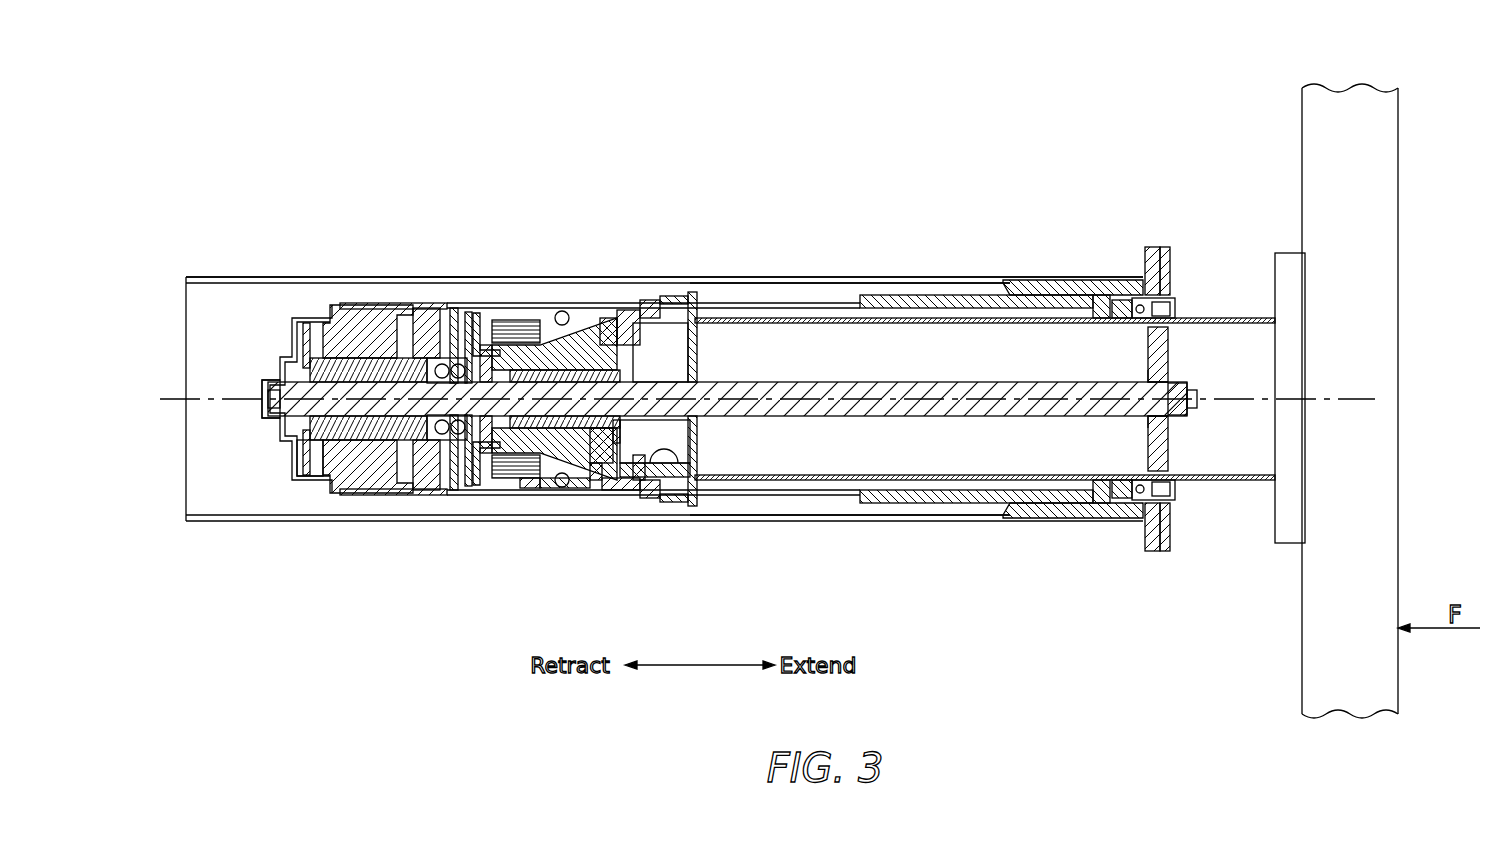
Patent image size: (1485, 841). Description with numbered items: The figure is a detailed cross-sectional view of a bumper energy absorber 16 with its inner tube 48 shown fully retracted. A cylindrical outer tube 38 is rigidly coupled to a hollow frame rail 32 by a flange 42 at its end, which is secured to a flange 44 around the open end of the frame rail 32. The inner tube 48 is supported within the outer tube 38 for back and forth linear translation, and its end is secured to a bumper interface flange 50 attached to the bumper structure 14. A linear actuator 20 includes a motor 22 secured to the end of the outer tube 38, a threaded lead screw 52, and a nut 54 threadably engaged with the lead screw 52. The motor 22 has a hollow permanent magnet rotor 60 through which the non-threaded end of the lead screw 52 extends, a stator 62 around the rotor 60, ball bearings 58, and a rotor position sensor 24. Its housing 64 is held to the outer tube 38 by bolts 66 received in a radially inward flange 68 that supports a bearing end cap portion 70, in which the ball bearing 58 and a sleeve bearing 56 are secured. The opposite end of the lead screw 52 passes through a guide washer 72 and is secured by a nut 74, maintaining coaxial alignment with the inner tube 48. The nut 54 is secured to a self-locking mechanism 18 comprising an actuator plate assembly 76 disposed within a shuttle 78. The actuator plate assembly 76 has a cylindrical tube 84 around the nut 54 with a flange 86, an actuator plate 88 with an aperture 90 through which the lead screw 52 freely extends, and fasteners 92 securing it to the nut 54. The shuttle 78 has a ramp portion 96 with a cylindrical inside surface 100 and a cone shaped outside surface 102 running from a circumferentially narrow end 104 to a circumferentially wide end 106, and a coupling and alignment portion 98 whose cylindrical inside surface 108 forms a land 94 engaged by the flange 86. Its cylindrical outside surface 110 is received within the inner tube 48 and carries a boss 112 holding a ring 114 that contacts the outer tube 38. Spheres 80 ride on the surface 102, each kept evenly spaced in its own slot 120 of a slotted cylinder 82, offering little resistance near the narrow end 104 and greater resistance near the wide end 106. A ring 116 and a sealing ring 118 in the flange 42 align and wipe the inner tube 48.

The bumper structure 14 is at (1338, 90).
The bumper energy absorber 16 is at (1020, 160).
The self-locking mechanism 18 is at (615, 513).
The linear actuator 20 is at (430, 272).
The motor 22 is at (375, 532).
The rotor position sensor 24 is at (296, 450).
The frame rail 32 is at (960, 277).
The outer tube 38 is at (815, 301).
The flange 42 is at (1167, 553).
The flange 44 is at (1148, 553).
The inner tube 48 is at (1220, 320).
The bumper interface flange 50 is at (1300, 270).
The lead screw 52 is at (958, 383).
The nut 54 is at (667, 462).
The sleeve bearing 56 is at (268, 394).
The ball bearings 58 is at (430, 485).
The rotor 60 is at (305, 426).
The stator 62 is at (327, 335).
The housing 64 is at (323, 488).
The bolts 66 is at (367, 301).
The flange 68 is at (455, 303).
The bearing end cap portion 70 is at (437, 356).
The guide washer 72 is at (1166, 355).
The nut 74 is at (1180, 386).
The actuator plate assembly 76 is at (645, 370).
The shuttle 78 is at (700, 344).
The spheres 80 is at (566, 300).
The slotted cylinder 82 is at (486, 310).
The cylindrical tube 84 is at (515, 492).
The flange 86 is at (617, 437).
The actuator plate 88 is at (484, 492).
The aperture 90 is at (500, 487).
The fasteners 92 is at (636, 318).
The land 94 is at (600, 472).
The ramp portion 96 is at (603, 322).
The coupling and alignment portion 98 is at (655, 308).
The cylindrical inside surface 100 is at (560, 492).
The cone shaped outside surface 102 is at (540, 487).
The circumferentially narrow end 104 is at (528, 328).
The circumferentially wide end 106 is at (572, 316).
The cylindrical inside surface 108 is at (687, 447).
The cylindrical outside surface 110 is at (685, 303).
The boss 112 is at (642, 467).
The ring 114 is at (627, 487).
The ring 116 is at (1118, 306).
The sealing ring 118 is at (1162, 316).
The slot 120 is at (455, 300).